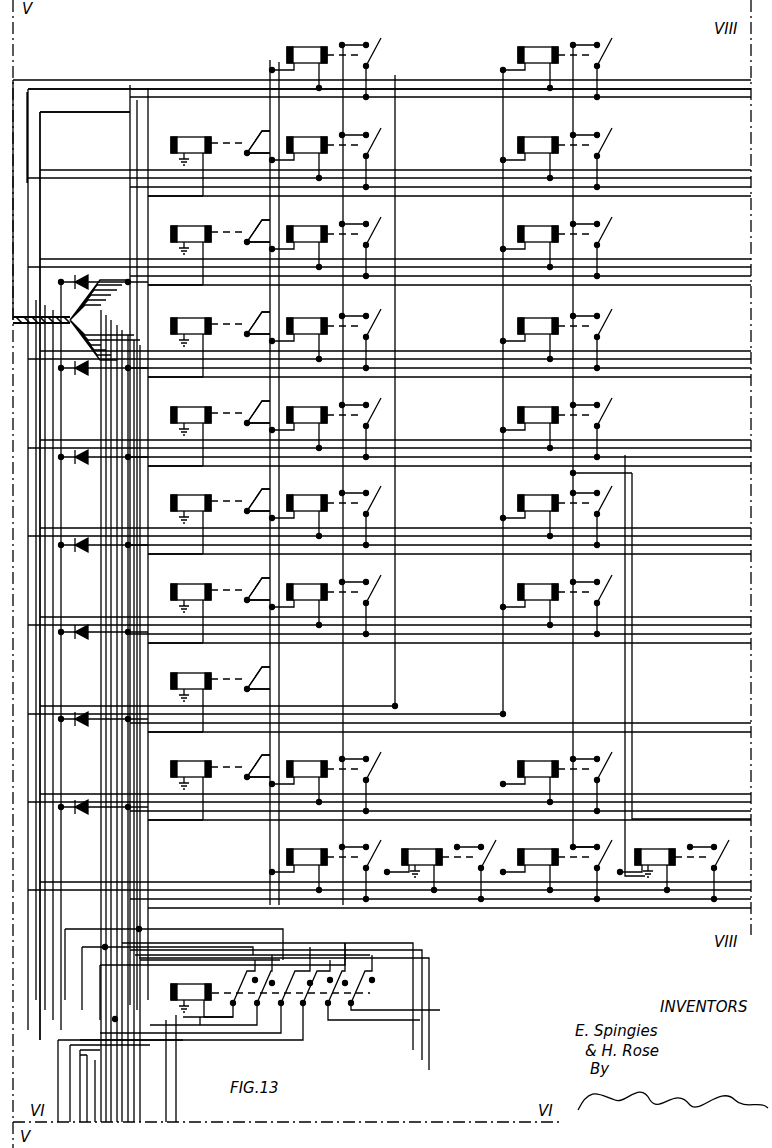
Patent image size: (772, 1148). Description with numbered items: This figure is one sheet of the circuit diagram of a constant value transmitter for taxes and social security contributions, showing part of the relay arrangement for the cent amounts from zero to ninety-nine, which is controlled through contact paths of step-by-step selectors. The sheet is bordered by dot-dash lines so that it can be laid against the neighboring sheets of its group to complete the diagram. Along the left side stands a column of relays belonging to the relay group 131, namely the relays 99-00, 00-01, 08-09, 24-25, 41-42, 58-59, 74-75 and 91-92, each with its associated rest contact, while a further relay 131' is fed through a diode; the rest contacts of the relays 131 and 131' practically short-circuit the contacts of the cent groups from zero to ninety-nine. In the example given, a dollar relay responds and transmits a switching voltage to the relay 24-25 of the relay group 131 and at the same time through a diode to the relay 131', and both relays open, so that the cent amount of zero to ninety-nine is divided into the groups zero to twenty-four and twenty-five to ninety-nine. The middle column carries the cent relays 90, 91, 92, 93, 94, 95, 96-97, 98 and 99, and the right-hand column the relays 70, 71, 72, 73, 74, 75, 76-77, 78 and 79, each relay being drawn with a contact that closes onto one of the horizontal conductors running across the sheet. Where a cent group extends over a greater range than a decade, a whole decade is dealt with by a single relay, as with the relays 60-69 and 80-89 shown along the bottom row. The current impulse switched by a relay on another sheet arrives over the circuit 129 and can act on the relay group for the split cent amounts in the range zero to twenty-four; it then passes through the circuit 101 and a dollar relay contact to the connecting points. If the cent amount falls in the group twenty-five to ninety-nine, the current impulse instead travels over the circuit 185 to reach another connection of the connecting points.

The circuit 129 is at (86, 104).
The circuit 185 is at (80, 120).
The circuit 101 is at (207, 286).
The relay group 131 is at (237, 490).
The relay 131' is at (237, 133).
The relay 90 is at (310, 52).
The relay 91 is at (310, 142).
The relay 92 is at (310, 231).
The relay 93 is at (310, 323).
The relay 94 is at (310, 412).
The relay 95 is at (310, 500).
The relay 96-97 is at (310, 589).
The relay 98 is at (310, 766).
The relay 99 is at (310, 854).
The relay 70 is at (541, 52).
The relay 71 is at (541, 142).
The relay 72 is at (541, 231).
The relay 73 is at (541, 323).
The relay 74 is at (541, 412).
The relay 75 is at (541, 500).
The relay 76-77 is at (541, 589).
The relay 78 is at (541, 766).
The relay 79 is at (541, 854).
The cent relay 80-89 is at (425, 854).
The cent relay 60-69 is at (658, 854).
The relay 99-00 is at (187, 142).
The relay 00-01 is at (187, 231).
The relay 08-09 is at (187, 323).
The relay 24-25 is at (187, 412).
The relay 41-42 is at (187, 500).
The relay 58-59 is at (187, 589).
The relay 74-75 is at (187, 678).
The relay 91-92 is at (187, 766).